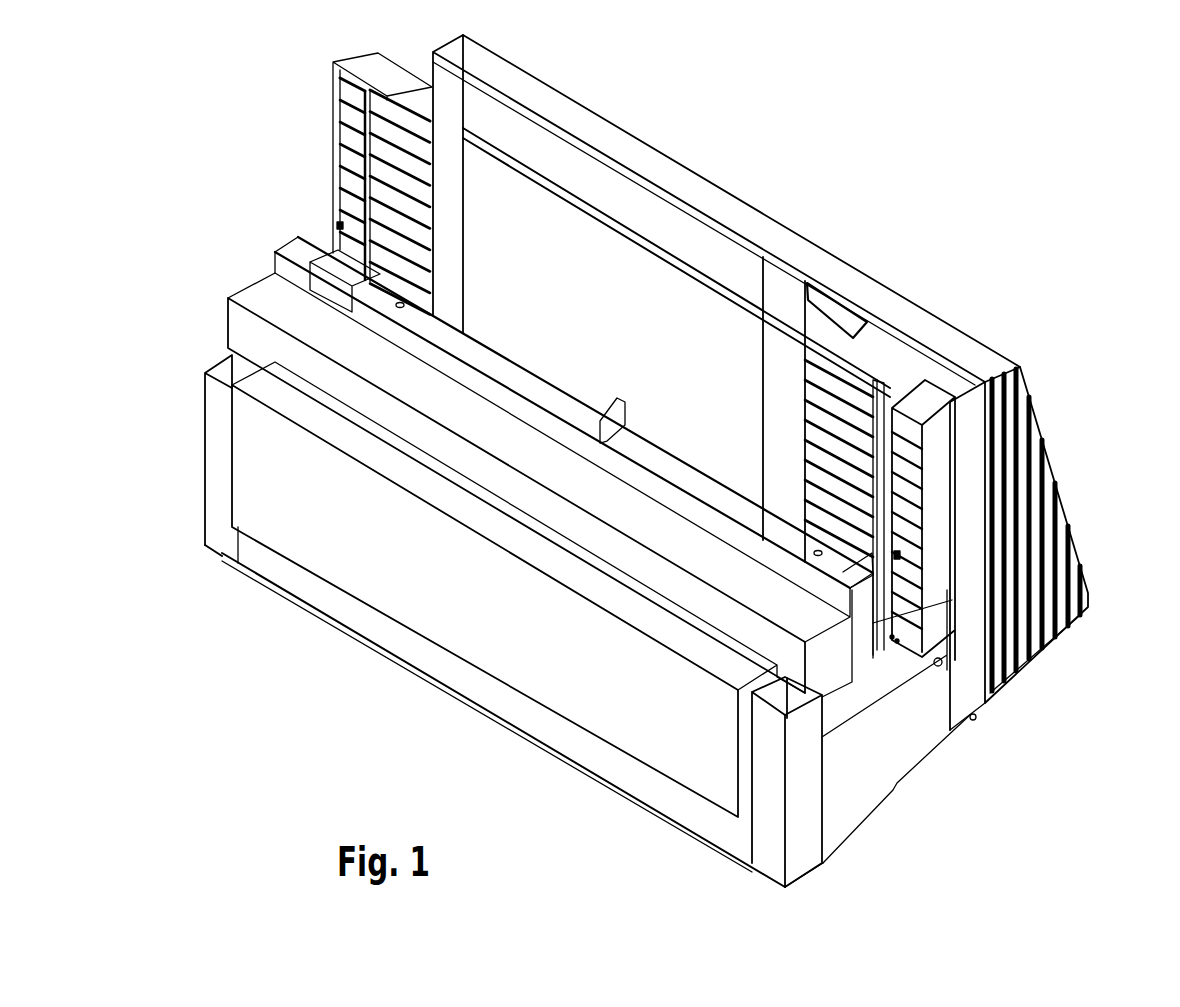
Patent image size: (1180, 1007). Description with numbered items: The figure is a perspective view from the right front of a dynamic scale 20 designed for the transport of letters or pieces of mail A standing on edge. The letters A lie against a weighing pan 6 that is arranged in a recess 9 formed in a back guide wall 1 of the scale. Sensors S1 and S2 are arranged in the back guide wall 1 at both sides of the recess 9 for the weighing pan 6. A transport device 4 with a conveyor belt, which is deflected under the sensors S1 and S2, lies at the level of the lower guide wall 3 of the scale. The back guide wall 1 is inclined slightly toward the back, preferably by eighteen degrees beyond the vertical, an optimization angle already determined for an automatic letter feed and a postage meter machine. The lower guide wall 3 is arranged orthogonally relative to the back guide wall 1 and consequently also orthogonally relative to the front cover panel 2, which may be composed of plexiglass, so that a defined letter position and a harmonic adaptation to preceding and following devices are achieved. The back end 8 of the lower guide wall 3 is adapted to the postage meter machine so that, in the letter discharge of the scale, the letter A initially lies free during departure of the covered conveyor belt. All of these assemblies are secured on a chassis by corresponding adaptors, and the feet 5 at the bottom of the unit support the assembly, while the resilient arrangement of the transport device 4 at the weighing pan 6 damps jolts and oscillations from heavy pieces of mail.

The back guide wall 1 is at (953, 540).
The front cover panel 2 is at (332, 63).
The lower guide wall 3 is at (897, 641).
The transport device 4 is at (973, 717).
The feet 5 is at (1027, 670).
The weighing pan 6 is at (937, 387).
The back end of the lower guide wall 8 is at (892, 637).
The recess 9 is at (893, 392).
The dynamic scale 20 is at (922, 203).
The letters or pieces of mail A is at (617, 170).
The sensor S1 is at (337, 225).
The sensor S2 is at (900, 557).